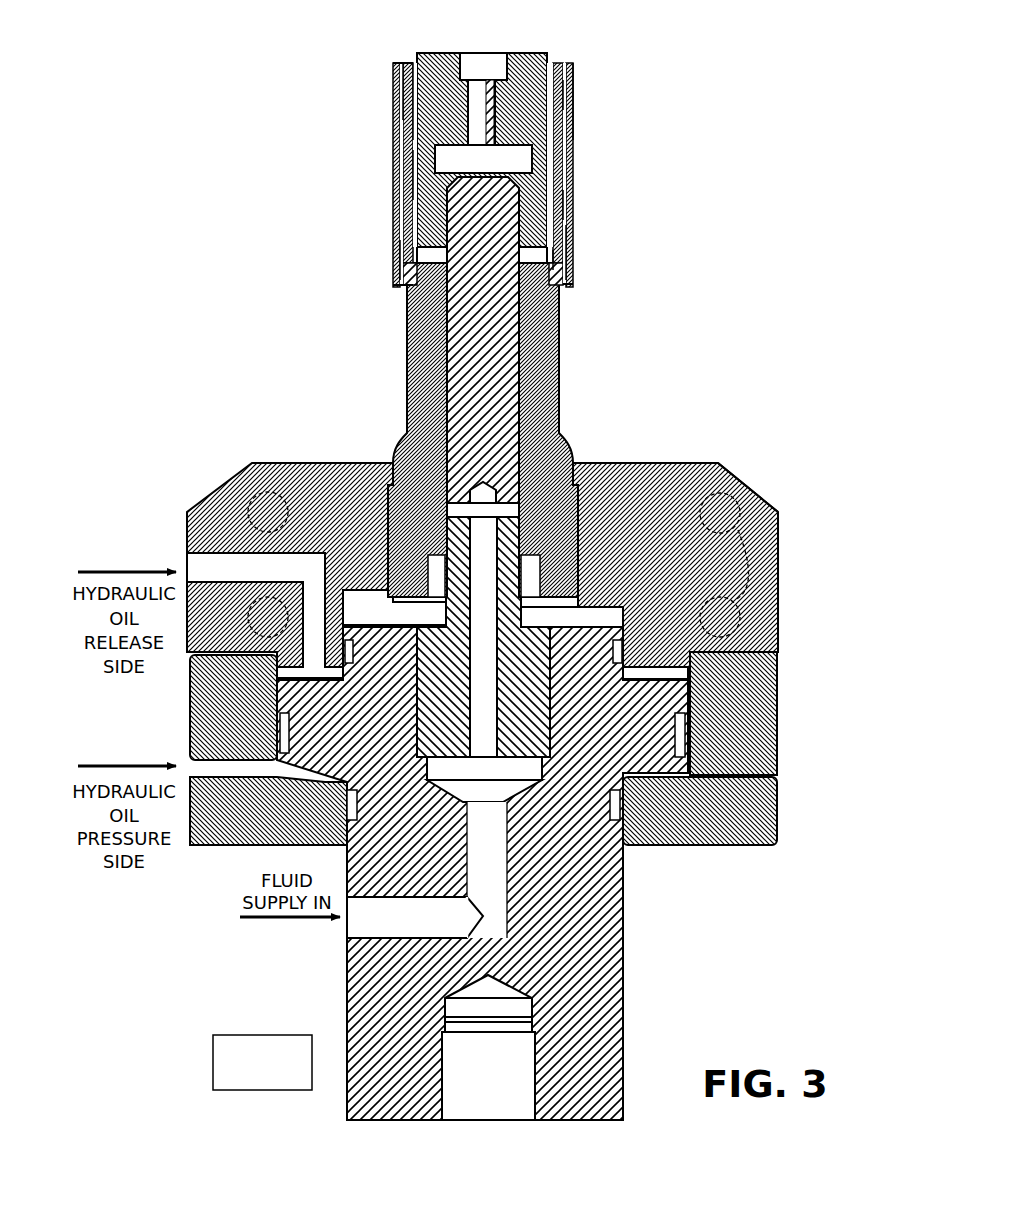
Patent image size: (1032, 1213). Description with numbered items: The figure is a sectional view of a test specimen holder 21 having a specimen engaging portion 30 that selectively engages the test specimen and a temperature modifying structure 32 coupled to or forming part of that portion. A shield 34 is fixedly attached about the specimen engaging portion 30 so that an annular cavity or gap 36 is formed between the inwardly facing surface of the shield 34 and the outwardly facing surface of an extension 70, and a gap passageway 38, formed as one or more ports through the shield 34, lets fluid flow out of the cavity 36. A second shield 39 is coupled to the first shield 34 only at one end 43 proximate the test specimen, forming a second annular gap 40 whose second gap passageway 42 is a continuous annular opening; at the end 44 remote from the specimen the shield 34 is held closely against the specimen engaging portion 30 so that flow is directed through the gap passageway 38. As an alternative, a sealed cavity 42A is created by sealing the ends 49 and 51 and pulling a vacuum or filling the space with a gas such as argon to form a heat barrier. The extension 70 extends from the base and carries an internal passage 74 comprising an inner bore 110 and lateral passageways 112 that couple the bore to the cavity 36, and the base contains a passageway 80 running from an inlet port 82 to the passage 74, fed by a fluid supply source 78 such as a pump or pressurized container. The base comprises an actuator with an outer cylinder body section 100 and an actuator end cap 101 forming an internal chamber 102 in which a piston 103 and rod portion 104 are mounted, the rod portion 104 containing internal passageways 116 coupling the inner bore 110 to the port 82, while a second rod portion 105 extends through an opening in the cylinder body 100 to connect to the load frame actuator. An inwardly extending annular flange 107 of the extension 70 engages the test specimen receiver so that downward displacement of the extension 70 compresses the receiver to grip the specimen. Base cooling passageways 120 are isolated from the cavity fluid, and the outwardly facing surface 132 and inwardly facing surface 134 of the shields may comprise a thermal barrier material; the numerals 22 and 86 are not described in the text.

The test specimen holder 21 is at (488, 58).
The valve body assembly 22 is at (800, 490).
The specimen engaging portion 30 is at (558, 44).
The temperature modifying structure 32 is at (604, 127).
The shield 34 is at (396, 226).
The cavity or gap 36 is at (562, 172).
The gap passageway 38 is at (563, 93).
The second shield 39 is at (566, 260).
The second gap or cavity 40 is at (566, 206).
The second gap passageway 42 is at (566, 292).
The sealed cavity 42A is at (402, 266).
The end 43 is at (386, 82).
The end 44 is at (394, 297).
The end 49 is at (396, 283).
The end 51 is at (403, 86).
The extension 70 is at (402, 421).
The internal passage 74 is at (455, 330).
The fluid supply source 78 is at (350, 935).
The passageway 80 is at (512, 885).
The inlet port 82 is at (347, 940).
The fluid passage wall 86 is at (420, 940).
The outer cylinder body section 100 is at (786, 629).
The actuator end cap 101 is at (786, 811).
The internal chamber 102 is at (692, 770).
The piston 103 is at (666, 706).
The rod portion 104 is at (510, 350).
The second rod portion 105 is at (592, 1022).
The annular flange 107 is at (414, 103).
The inner bore 110 is at (502, 413).
The lateral passageways 112 is at (578, 284).
The internal passageways 116 is at (499, 514).
The base cooling passageways 120 is at (752, 590).
The outwardly facing surface 132 is at (413, 178).
The inwardly facing surface 134 is at (566, 230).